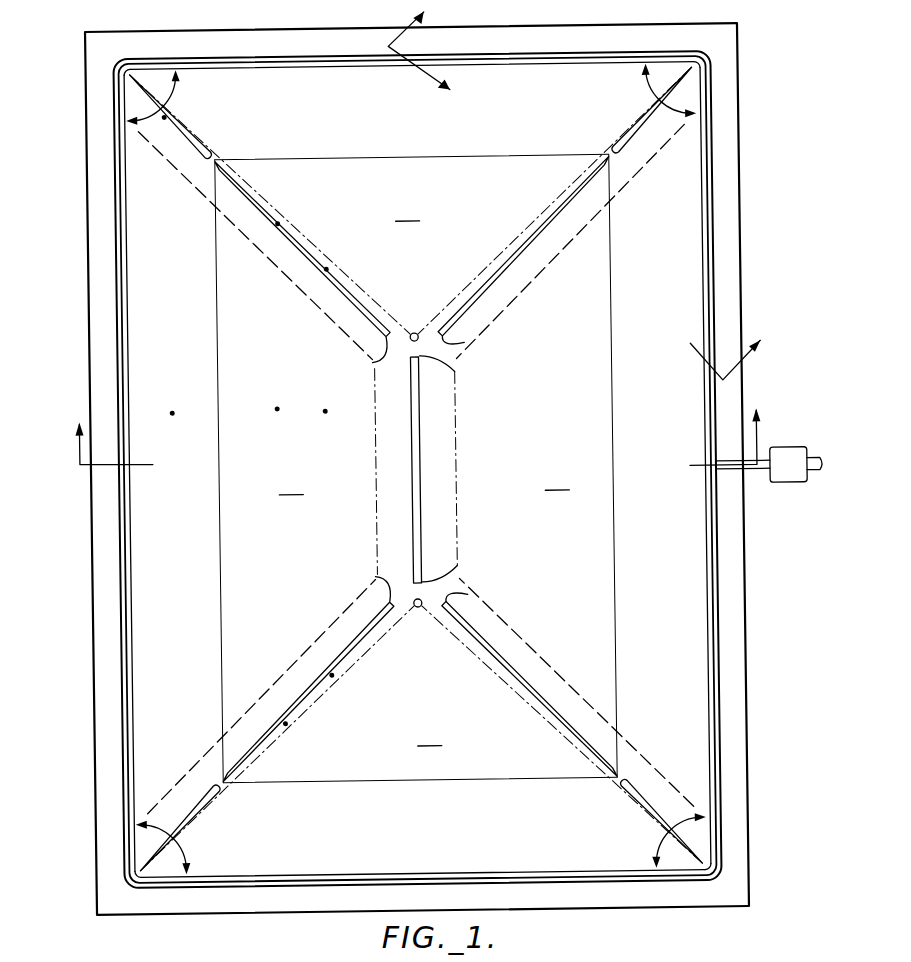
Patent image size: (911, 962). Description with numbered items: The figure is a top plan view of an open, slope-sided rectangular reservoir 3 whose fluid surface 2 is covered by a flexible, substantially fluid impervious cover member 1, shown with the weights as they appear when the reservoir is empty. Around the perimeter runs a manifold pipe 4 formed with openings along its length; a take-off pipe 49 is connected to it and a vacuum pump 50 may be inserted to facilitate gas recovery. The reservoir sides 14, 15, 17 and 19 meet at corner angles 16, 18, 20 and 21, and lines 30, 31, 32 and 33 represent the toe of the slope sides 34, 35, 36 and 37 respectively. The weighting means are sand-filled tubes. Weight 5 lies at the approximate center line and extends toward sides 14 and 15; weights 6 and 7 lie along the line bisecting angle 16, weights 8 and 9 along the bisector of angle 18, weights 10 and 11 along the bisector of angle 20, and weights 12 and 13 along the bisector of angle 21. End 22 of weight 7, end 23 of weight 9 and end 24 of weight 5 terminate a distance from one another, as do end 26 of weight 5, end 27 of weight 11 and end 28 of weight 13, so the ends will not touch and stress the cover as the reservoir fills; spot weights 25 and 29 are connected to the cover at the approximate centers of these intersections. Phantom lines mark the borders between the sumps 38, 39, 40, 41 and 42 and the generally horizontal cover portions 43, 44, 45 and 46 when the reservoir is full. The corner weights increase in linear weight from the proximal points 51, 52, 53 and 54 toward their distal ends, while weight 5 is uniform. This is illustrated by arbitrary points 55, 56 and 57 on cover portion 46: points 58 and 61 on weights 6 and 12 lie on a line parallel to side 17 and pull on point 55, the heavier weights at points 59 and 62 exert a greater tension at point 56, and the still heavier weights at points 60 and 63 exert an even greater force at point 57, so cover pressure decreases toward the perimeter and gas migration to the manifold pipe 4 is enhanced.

The cover member 1 is at (155, 592).
The fluid surface 2 is at (415, 427).
The reservoir 3 is at (584, 192).
The manifold pipe 4 is at (718, 553).
The weight 5 is at (421, 438).
The weight 6 is at (192, 129).
The weight 7 is at (269, 206).
The weight 8 is at (640, 128).
The weight 9 is at (548, 220).
The weight 10 is at (645, 800).
The weight 11 is at (505, 671).
The weight 12 is at (207, 807).
The weight 13 is at (318, 690).
The reservoir side 14 is at (286, 55).
The reservoir side 15 is at (180, 876).
The angle 16 is at (176, 93).
The side 17 is at (128, 640).
The angle 18 is at (658, 90).
The reservoir side 19 is at (718, 214).
The angle 20 is at (658, 840).
The angle 21 is at (192, 848).
The end of weight 7 22 is at (374, 362).
The end of weight 9 23 is at (466, 343).
The end of weight 5 24 is at (456, 372).
The spot weight 25 is at (414, 332).
The end of weight 5 26 is at (456, 566).
The end of weight 11 27 is at (466, 595).
The end of weight 13 28 is at (374, 576).
The spot weight 29 is at (417, 608).
The line 30 is at (382, 157).
The line 31 is at (614, 525).
The line 32 is at (488, 780).
The line 33 is at (219, 525).
The slope side 34 is at (532, 56).
The slope side 35 is at (675, 592).
The slope side 36 is at (300, 855).
The slope side 37 is at (157, 322).
The sump 38 is at (248, 224).
The sump 39 is at (606, 211).
The sump 40 is at (442, 530).
The sump 41 is at (548, 666).
The sump 42 is at (296, 745).
The horizontal cover portion 43 is at (407, 209).
The horizontal cover portion 44 is at (557, 478).
The horizontal cover portion 45 is at (429, 734).
The horizontal cover portion 46 is at (291, 483).
The take-off pipe 49 is at (757, 474).
The vacuum pump 50 is at (800, 452).
The proximal point 51 is at (133, 73).
The proximal point 52 is at (700, 72).
The proximal point 53 is at (705, 866).
The proximal point 54 is at (136, 866).
The arbitrary point 55 is at (173, 408).
The arbitrary point 56 is at (278, 405).
The arbitrary point 57 is at (326, 412).
The arbitrary point 58 is at (169, 116).
The point 59 is at (281, 224).
The point 60 is at (329, 270).
The arbitrary point 61 is at (182, 825).
The point 62 is at (282, 720).
The point 63 is at (329, 672).